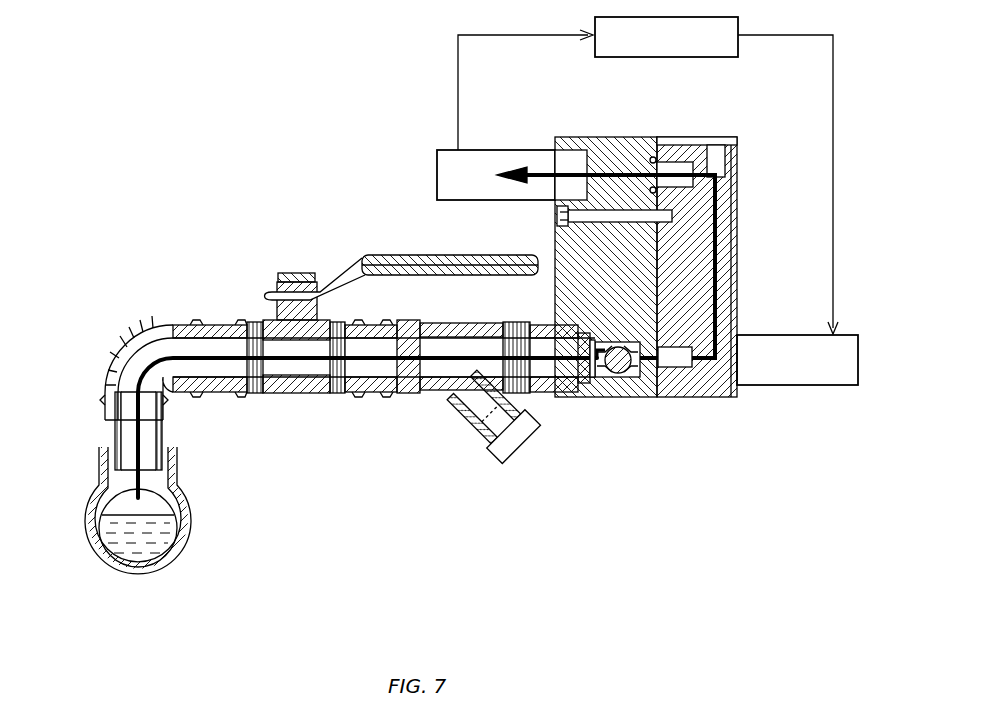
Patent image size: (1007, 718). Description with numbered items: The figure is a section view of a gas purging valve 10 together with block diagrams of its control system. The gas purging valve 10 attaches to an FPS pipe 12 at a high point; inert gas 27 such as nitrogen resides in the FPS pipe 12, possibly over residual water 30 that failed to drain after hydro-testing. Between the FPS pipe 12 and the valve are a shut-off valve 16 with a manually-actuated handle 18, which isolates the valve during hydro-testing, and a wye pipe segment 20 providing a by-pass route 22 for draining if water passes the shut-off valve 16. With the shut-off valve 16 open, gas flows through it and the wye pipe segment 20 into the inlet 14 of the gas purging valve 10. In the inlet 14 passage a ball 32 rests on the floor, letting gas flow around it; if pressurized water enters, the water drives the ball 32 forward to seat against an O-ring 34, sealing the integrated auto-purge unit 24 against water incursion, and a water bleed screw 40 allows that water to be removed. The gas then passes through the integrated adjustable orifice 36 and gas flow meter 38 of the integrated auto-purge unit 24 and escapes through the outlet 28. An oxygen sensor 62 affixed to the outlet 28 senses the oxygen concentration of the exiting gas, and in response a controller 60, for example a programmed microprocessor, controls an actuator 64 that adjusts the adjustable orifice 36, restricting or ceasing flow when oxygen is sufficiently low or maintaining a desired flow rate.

The gas purging valve 10 is at (292, 108).
The FPS pipe 12 is at (190, 528).
The inlet 14 is at (565, 397).
The shut-off valve 16 is at (290, 365).
The manually-actuated handle 18 is at (437, 255).
The wye pipe segment 20 is at (462, 340).
The by-pass route 22 is at (520, 452).
The integrated auto-purge unit 24 is at (617, 137).
The inert gas 27 is at (135, 500).
The outlet 28 is at (555, 163).
The residual water 30 is at (125, 540).
The ball 32 is at (617, 397).
The O-ring 34 is at (640, 397).
The adjustable orifice 36 is at (725, 342).
The gas flow meter 38 is at (742, 243).
The water bleed screw 40 is at (600, 397).
The controller 60 is at (735, 57).
The oxygen sensor 62 is at (437, 159).
The actuator 64 is at (828, 385).